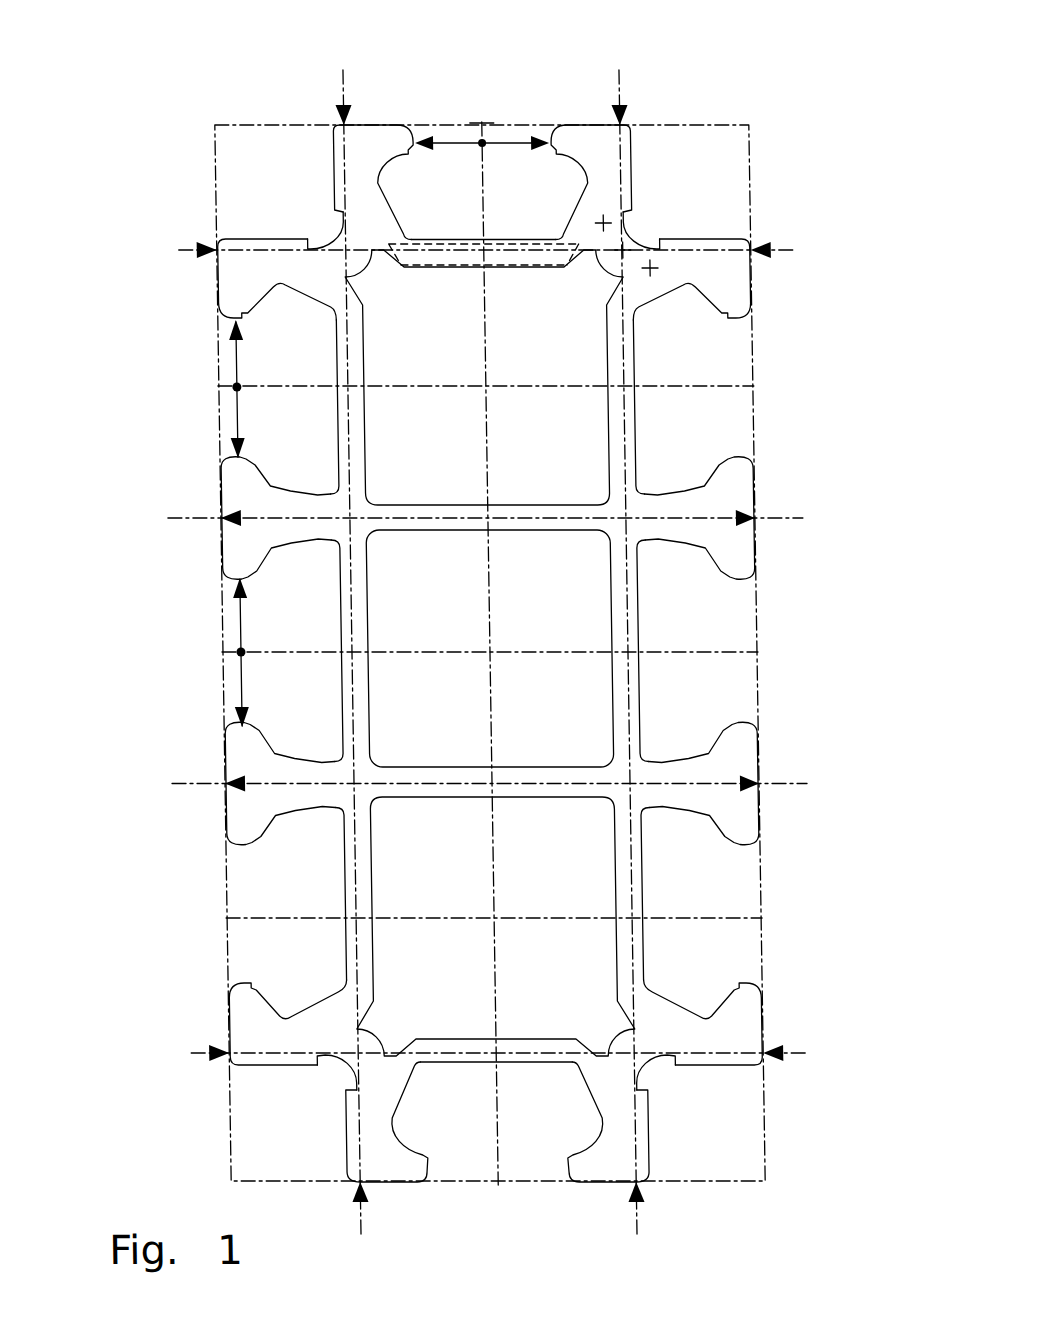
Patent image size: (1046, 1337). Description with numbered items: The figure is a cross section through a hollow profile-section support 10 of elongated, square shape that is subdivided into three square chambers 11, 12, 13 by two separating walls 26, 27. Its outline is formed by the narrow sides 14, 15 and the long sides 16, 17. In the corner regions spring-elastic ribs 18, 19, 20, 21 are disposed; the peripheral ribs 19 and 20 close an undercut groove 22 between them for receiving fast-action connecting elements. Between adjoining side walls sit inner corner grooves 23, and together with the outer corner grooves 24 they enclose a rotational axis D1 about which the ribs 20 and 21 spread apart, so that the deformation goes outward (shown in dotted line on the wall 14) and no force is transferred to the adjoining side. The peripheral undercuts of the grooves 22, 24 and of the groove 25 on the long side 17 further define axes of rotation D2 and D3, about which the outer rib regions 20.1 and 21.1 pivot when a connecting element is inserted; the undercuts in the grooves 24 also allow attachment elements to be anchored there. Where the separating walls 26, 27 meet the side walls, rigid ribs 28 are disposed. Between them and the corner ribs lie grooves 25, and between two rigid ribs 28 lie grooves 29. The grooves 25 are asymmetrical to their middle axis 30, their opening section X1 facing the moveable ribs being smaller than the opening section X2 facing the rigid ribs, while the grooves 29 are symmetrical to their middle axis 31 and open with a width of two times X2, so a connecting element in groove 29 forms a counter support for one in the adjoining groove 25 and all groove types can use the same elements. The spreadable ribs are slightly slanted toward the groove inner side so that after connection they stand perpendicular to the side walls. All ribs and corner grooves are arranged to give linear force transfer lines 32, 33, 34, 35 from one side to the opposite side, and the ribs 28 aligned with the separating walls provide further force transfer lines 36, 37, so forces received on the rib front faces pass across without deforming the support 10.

The hollow profile-section support 10 is at (799, 93).
The chamber 11 is at (543, 426).
The chamber 12 is at (544, 686).
The chamber 13 is at (540, 898).
The narrow side 14 is at (453, 265).
The narrow side 15 is at (449, 1042).
The long side 16 is at (364, 613).
The long side 17 is at (618, 615).
The spring-elastic rib 18 is at (239, 238).
The spring-elastic rib 19 is at (340, 178).
The spring-elastic rib 20 is at (640, 178).
The outer rib region 20.1 is at (598, 140).
The spring-elastic rib 21 is at (741, 235).
The outer rib region 21.1 is at (744, 295).
The groove 22 is at (546, 224).
The inner corner groove 23 is at (381, 280).
The outer corner groove 24 is at (325, 230).
The groove 25 is at (312, 454).
The separating wall 26 is at (455, 507).
The separating wall 27 is at (451, 773).
The rigid rib 28 is at (234, 560).
The groove 29 is at (311, 626).
The middle axis 30 is at (270, 385).
The middle axis 31 is at (265, 652).
The linear force transfer line 32 is at (349, 80).
The linear force transfer line 33 is at (632, 78).
The linear force transfer line 34 is at (201, 245).
The linear force transfer line 35 is at (184, 1055).
The linear force transfer line 36 is at (789, 518).
The linear force transfer line 37 is at (789, 783).
The rotational axis D1 is at (629, 252).
The axis of rotation D2 is at (609, 223).
The axis of rotation D3 is at (656, 268).
The opening section X1 is at (241, 347).
The opening section X2 is at (239, 695).